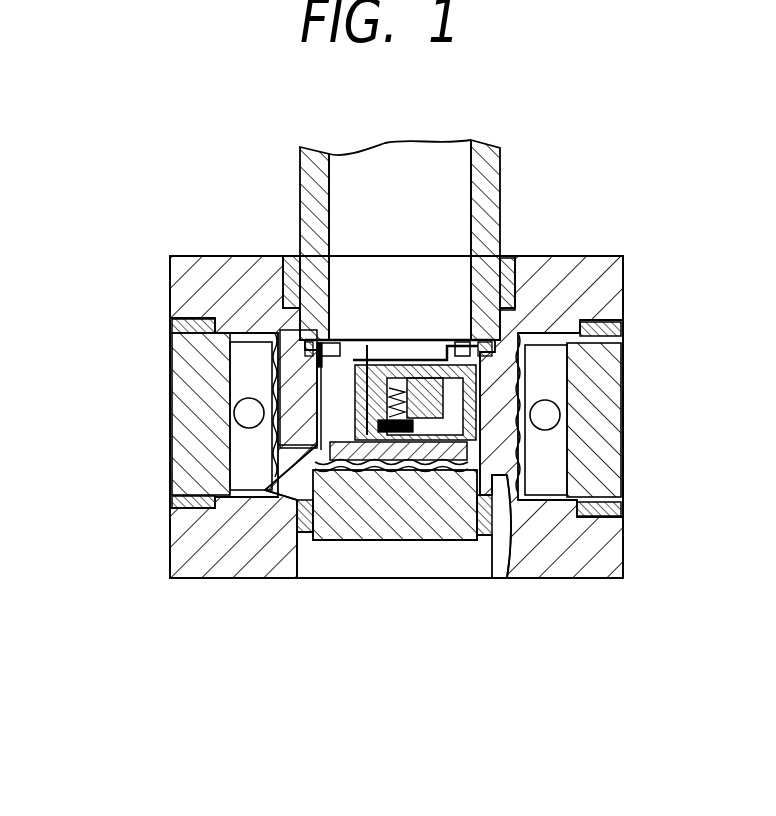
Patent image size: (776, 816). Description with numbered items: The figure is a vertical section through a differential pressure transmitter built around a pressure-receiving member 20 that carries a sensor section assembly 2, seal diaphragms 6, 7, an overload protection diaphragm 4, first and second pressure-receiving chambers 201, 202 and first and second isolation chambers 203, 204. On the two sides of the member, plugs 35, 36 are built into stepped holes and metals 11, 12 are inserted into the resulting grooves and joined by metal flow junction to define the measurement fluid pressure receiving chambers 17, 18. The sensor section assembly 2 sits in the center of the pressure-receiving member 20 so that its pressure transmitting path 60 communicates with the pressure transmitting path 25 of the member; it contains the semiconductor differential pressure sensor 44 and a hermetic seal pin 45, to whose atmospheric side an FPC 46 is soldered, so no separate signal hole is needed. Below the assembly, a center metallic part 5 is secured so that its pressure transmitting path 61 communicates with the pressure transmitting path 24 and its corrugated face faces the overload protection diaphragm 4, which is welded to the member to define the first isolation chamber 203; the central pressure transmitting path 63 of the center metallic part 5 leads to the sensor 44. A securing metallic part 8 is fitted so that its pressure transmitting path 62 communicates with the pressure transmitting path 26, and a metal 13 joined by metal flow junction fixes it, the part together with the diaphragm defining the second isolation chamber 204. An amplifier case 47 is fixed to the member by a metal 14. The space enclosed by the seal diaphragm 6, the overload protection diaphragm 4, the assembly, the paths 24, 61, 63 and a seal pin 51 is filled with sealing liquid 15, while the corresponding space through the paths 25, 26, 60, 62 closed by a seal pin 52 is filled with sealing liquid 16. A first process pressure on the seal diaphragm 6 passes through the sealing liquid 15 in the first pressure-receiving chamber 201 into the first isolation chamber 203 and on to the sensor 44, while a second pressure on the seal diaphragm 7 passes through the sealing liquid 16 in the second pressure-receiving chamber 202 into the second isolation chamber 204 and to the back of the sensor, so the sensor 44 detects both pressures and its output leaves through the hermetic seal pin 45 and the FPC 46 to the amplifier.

The sensor section assembly 2 is at (455, 348).
The overload protection diaphragm 4 is at (392, 540).
The center metallic part 5 is at (356, 358).
The seal diaphragm 6 is at (300, 460).
The seal diaphragm 7 is at (560, 473).
The securing metallic part 8 is at (442, 560).
The metal 11 is at (188, 288).
The metal 12 is at (600, 509).
The metal 13 is at (483, 520).
The metal 14 is at (504, 270).
The sealing liquid 15 is at (232, 433).
The sealing liquid 16 is at (555, 383).
The measurement fluid pressure receiving chamber 17 is at (230, 354).
The measurement fluid pressure receiving chamber 18 is at (570, 364).
The pressure-receiving member 20 is at (616, 256).
The pressure transmitting path 24 is at (300, 471).
The pressure transmitting path 25 is at (603, 334).
The pressure transmitting path 26 is at (545, 452).
The plug 35 is at (275, 381).
The plug 36 is at (522, 486).
The semiconductor differential pressure sensor 44 is at (300, 560).
The hermetic seal pin 45 is at (362, 352).
The FPC 46 is at (452, 348).
The amplifier case 47 is at (488, 152).
The seal pin 51 is at (312, 346).
The seal pin 52 is at (583, 320).
The pressure transmitting path 60 is at (417, 352).
The pressure transmitting path 61 is at (205, 500).
The pressure transmitting path 62 is at (503, 500).
The pressure transmitting path 63 is at (372, 520).
The first pressure-receiving chamber 201 is at (237, 373).
The second pressure-receiving chamber 202 is at (548, 405).
The first isolation chamber 203 is at (335, 560).
The second isolation chamber 204 is at (418, 465).